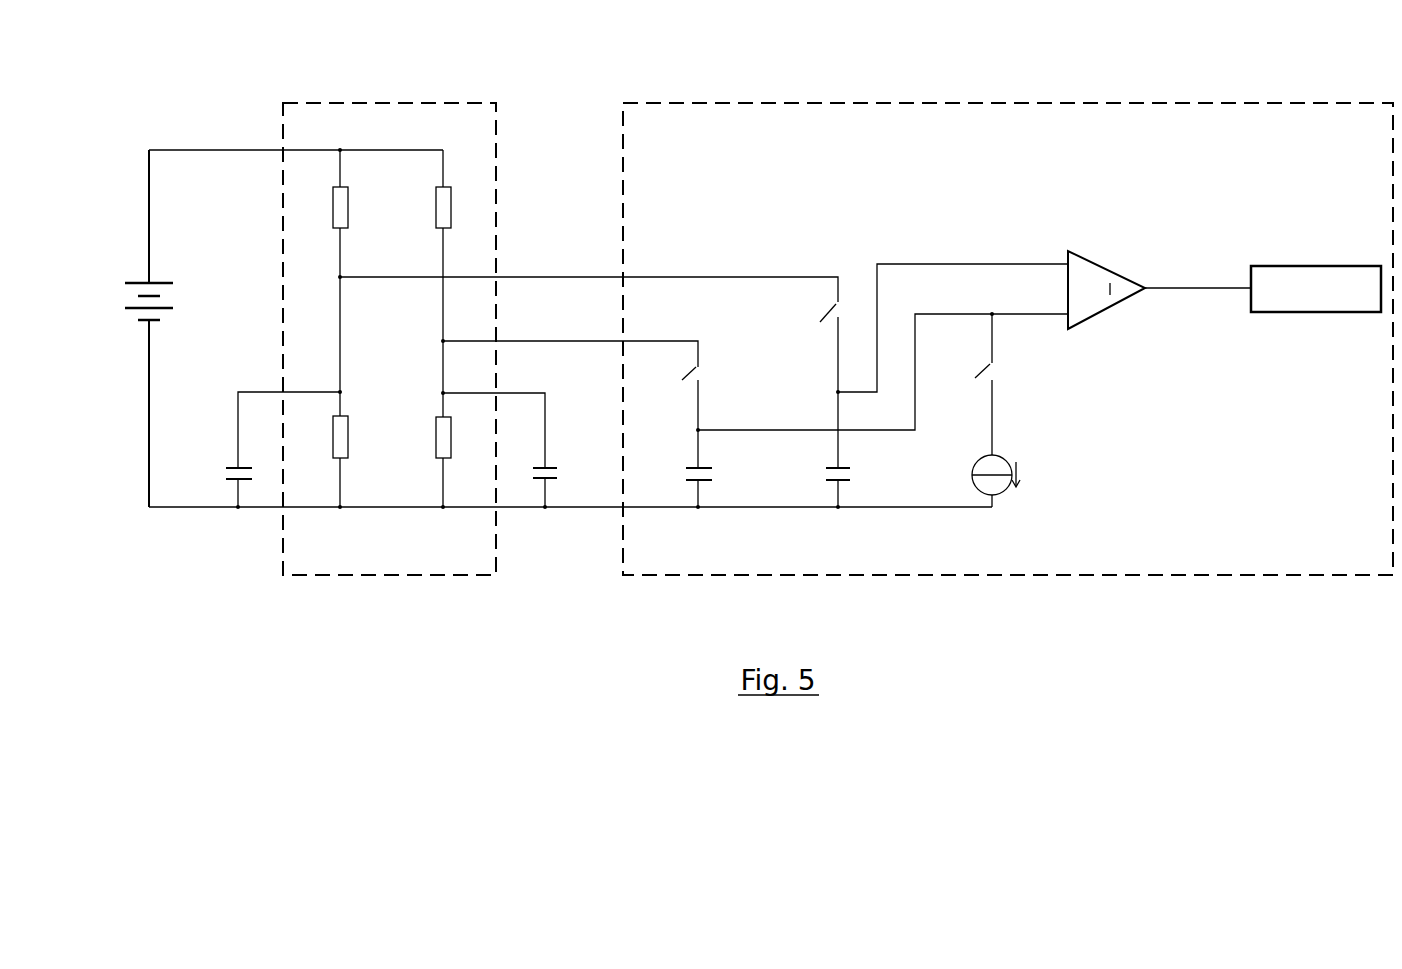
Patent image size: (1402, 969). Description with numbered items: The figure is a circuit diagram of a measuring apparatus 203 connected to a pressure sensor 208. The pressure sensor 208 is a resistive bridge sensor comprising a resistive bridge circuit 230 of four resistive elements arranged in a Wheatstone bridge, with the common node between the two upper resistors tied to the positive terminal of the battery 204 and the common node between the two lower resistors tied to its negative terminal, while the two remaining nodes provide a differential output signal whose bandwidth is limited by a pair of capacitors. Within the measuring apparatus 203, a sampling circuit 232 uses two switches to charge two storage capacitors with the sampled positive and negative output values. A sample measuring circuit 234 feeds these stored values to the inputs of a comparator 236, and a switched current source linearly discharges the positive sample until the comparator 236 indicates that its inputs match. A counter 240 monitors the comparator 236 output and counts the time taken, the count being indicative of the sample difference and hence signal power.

The measuring apparatus 203 is at (866, 357).
The battery 204 is at (118, 293).
The pressure sensor 208 is at (378, 327).
The resistive bridge circuit 230 is at (338, 332).
The sampling circuit 232 is at (813, 275).
The sample measuring circuit 234 is at (992, 263).
The comparator 236 is at (1098, 310).
The counter 240 is at (1285, 307).